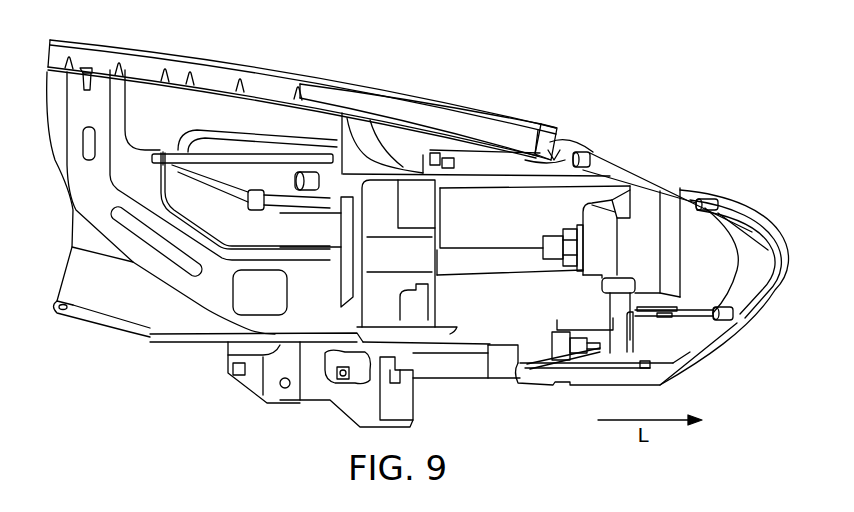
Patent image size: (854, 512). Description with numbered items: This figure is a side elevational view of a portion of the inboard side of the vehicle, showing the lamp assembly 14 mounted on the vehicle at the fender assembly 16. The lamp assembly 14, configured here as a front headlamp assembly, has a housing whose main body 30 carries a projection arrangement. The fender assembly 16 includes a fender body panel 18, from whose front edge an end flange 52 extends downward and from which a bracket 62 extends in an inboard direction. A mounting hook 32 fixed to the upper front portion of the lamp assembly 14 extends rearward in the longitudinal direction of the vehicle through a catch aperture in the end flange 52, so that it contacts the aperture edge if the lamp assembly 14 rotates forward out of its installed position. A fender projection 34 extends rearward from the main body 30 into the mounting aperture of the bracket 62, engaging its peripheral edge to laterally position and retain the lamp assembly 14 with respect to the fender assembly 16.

The lamp assembly 14 is at (640, 182).
The fender assembly 16 is at (551, 112).
The fender body panel 18 is at (212, 52).
The main body 30 is at (743, 237).
The mounting hook 32 is at (578, 152).
The fender projection 34 is at (177, 160).
The end flange 52 is at (560, 136).
The bracket 62 is at (126, 108).